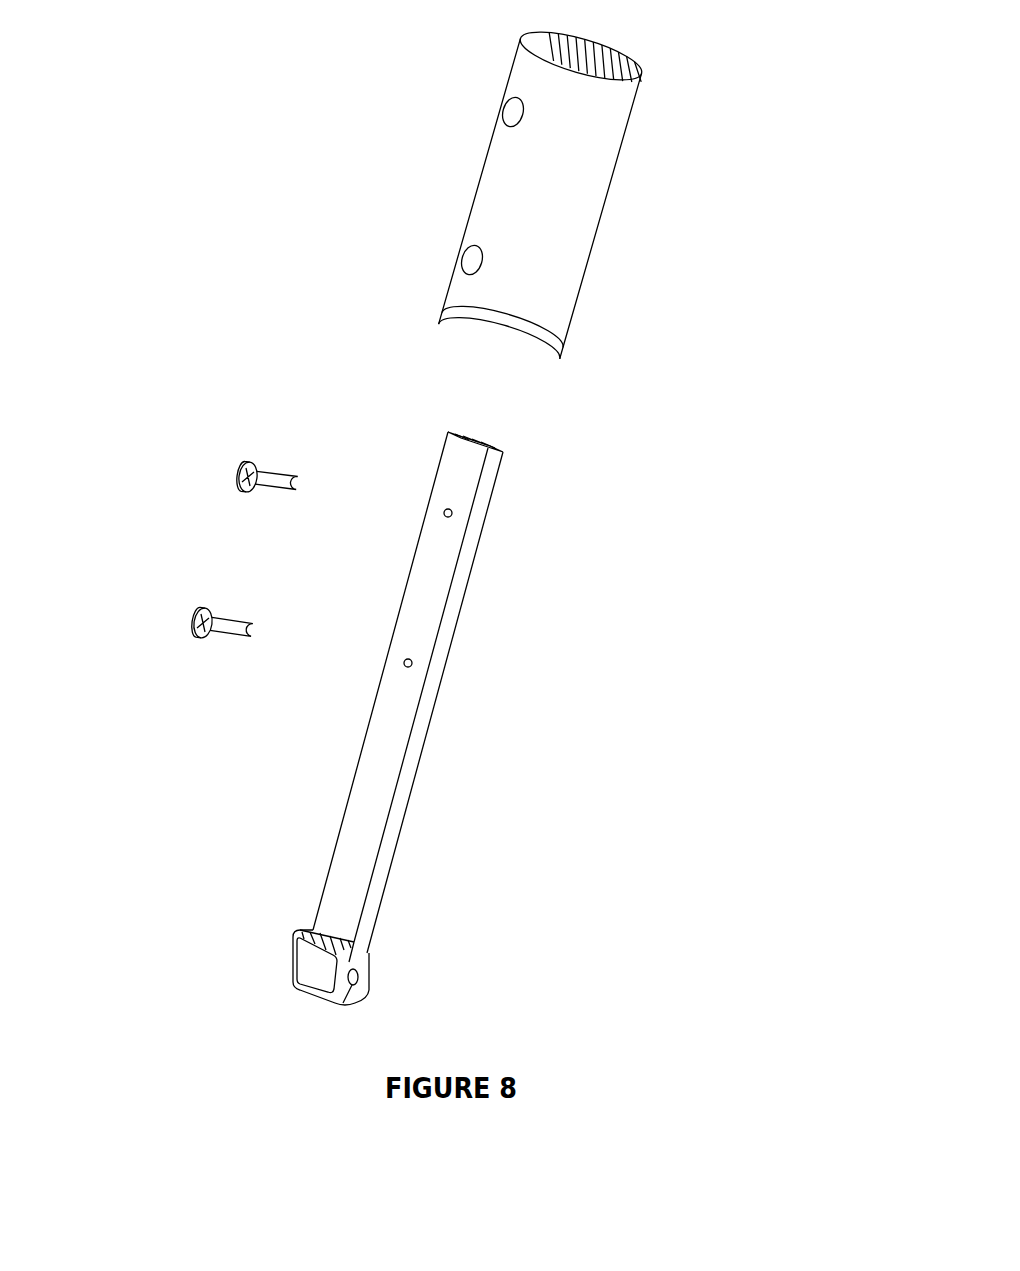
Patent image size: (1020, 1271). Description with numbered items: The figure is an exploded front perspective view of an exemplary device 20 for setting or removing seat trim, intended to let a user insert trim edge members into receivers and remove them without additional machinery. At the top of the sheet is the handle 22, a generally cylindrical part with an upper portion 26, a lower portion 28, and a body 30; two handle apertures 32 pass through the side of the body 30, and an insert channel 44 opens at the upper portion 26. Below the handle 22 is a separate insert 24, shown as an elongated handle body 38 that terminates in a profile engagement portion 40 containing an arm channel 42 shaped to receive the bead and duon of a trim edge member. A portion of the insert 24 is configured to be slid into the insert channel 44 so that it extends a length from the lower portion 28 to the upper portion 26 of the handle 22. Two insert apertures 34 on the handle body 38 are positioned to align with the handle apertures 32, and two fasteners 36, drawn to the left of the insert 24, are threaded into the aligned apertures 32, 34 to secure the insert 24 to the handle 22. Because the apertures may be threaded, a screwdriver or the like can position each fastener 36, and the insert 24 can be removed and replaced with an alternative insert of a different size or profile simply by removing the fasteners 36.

The device 20 is at (180, 127).
The handle 22 is at (577, 195).
The insert 24 is at (483, 692).
The upper portion 26 is at (547, 47).
The lower portion 28 is at (447, 335).
The body 30 is at (585, 178).
The handle apertures 32 is at (478, 260).
The insert apertures 34 is at (412, 661).
The fasteners 36 is at (203, 610).
The handle body 38 is at (405, 772).
The profile engagement portion 40 is at (334, 942).
The arm channel 42 is at (362, 977).
The insert channel 44 is at (552, 35).